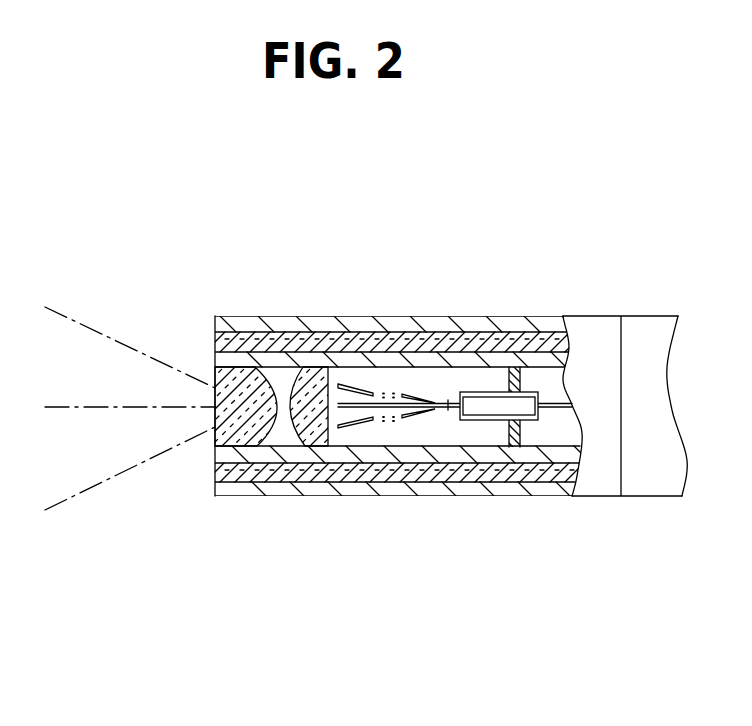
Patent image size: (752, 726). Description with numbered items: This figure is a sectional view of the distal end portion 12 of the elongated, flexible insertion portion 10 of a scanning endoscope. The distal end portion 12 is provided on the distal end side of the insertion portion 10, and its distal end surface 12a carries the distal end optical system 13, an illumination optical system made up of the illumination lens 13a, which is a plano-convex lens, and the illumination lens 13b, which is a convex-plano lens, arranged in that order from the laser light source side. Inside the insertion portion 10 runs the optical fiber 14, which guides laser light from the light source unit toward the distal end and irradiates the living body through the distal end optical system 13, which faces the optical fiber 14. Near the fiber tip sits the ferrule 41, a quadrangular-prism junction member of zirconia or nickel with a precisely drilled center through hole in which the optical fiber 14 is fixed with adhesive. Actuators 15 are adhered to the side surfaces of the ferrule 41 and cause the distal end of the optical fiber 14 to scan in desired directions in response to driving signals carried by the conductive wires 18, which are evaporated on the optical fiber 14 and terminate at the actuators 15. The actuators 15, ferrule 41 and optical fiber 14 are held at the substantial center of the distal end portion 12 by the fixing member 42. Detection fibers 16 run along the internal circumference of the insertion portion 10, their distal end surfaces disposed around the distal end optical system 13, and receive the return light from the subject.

The insertion portion 10 is at (652, 316).
The distal end portion 12 is at (420, 316).
The distal end surface 12a is at (215, 325).
The distal end optical system 13 is at (279, 524).
The illumination lens 13a is at (315, 438).
The illumination lens 13b is at (246, 435).
The optical fiber 14 is at (375, 408).
The actuators 15 is at (516, 407).
The detection fibers 16 is at (440, 473).
The conductive wires 18 is at (563, 316).
The ferrule 41 is at (493, 420).
The fixing member 42 is at (520, 370).